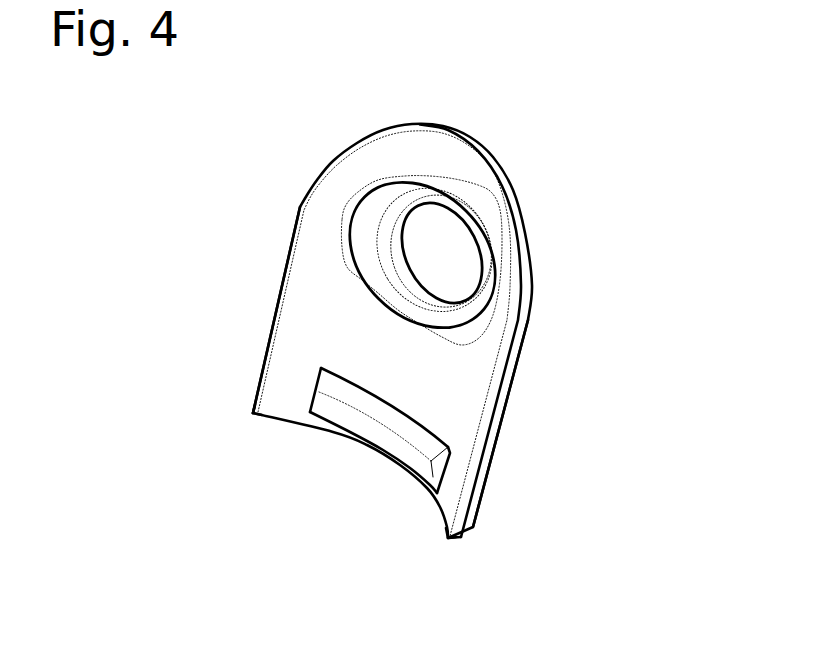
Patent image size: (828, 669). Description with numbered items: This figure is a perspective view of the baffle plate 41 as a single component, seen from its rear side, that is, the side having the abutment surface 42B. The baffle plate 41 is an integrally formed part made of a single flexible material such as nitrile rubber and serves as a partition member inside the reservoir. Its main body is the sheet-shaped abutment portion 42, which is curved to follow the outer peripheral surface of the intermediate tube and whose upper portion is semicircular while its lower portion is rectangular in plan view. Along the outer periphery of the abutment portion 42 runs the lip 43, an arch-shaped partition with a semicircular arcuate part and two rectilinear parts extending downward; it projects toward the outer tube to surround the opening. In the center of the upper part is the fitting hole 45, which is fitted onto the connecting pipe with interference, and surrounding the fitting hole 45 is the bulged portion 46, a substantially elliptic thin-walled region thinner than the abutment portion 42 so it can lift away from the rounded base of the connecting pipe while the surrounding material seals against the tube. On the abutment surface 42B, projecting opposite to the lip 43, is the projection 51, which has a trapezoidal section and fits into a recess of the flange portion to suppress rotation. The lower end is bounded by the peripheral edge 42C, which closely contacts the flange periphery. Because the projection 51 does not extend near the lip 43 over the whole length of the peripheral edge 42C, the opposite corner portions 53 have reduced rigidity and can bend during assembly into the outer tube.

The baffle plate 41 is at (543, 190).
The abutment portion 42 is at (317, 278).
The abutment surface 42B is at (310, 306).
The peripheral edge 42C is at (321, 423).
The lip 43 is at (510, 392).
The fitting hole 45 is at (400, 236).
The bulged portion 46 is at (367, 219).
The projection 51 is at (378, 439).
The corner portions 53 is at (278, 382).